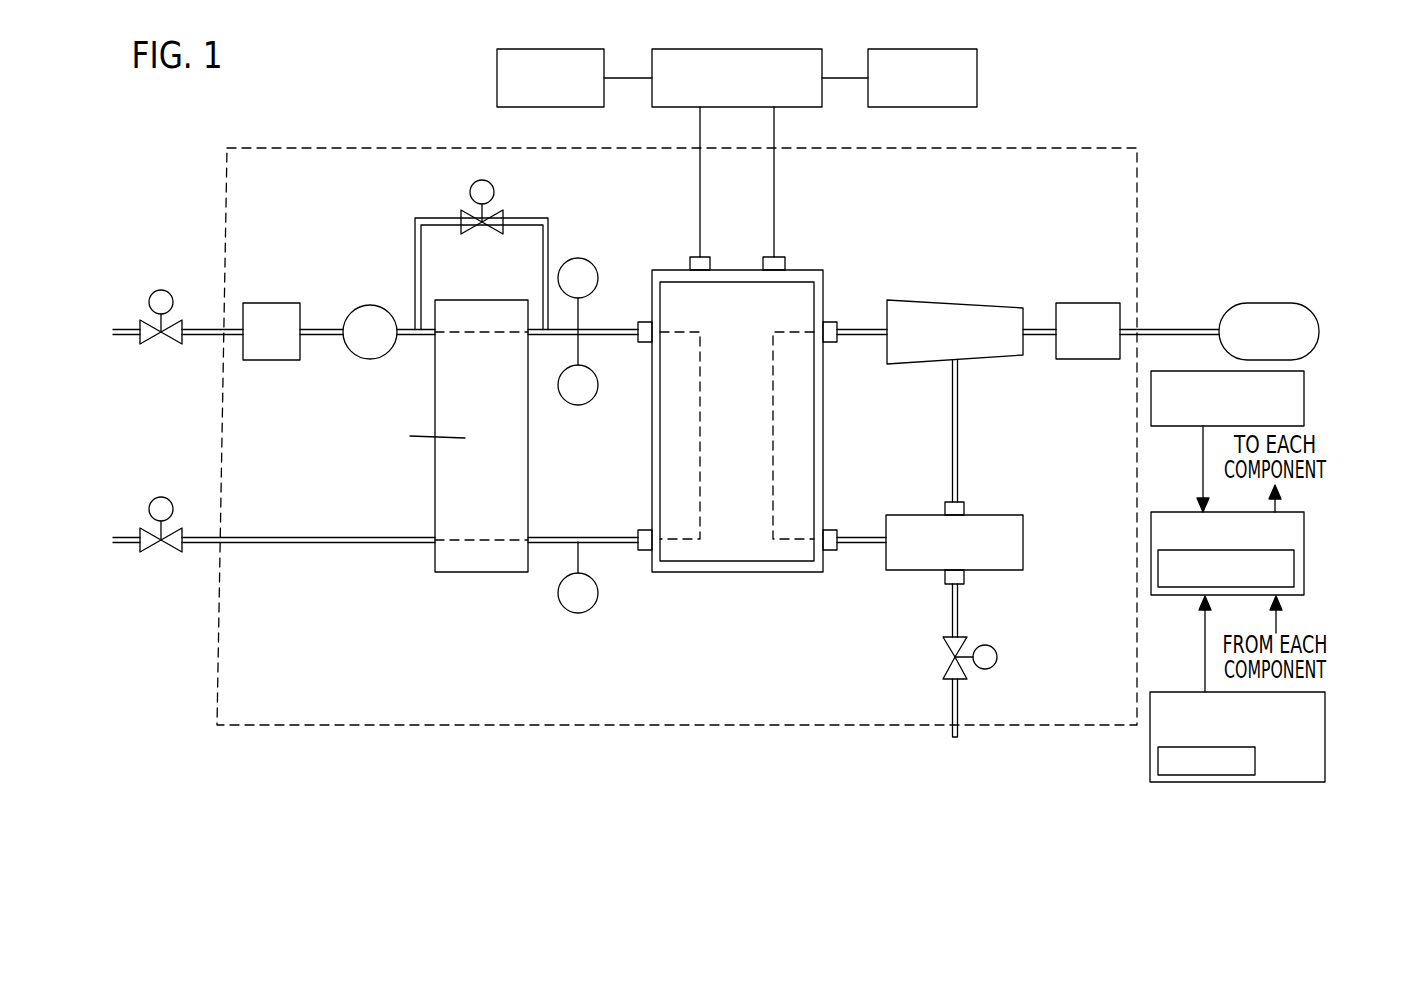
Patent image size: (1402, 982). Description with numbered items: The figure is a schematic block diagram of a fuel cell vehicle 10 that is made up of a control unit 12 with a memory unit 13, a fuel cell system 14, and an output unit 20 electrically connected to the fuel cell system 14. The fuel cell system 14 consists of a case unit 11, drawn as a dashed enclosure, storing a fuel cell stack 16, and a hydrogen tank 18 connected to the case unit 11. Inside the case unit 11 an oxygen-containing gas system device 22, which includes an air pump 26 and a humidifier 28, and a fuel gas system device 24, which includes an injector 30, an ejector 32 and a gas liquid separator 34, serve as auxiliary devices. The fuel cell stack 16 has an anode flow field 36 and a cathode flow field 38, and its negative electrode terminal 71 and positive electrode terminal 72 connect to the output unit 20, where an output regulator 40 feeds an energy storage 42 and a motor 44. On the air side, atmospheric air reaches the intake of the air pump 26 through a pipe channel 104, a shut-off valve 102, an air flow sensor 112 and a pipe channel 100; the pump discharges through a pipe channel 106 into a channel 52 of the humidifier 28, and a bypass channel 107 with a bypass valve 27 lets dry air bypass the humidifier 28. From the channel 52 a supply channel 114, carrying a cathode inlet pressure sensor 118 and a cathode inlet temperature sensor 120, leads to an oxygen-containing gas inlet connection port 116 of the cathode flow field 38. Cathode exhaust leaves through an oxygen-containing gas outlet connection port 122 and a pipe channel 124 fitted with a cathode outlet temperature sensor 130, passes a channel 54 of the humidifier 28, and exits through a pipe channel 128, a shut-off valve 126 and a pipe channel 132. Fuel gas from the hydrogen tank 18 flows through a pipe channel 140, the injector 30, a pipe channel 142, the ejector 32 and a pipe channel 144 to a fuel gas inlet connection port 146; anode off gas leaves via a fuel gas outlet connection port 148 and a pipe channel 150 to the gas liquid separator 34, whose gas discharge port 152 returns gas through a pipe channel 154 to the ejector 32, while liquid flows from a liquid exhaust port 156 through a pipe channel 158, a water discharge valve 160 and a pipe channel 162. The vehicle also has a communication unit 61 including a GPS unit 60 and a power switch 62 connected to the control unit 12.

The fuel cell vehicle 10 is at (323, 83).
The case unit 11 is at (1024, 146).
The control unit 12 is at (1185, 512).
The memory unit 13 is at (1296, 568).
The fuel cell system 14 is at (1102, 137).
The fuel cell stack 16 is at (823, 438).
The hydrogen tank 18 is at (1275, 303).
The output unit 20 is at (1000, 58).
The oxygen-containing gas system device 22 is at (310, 238).
The fuel gas system device 24 is at (1060, 410).
The air pump 26 is at (380, 306).
The bypass valve 27 is at (470, 188).
The humidifier 28 is at (468, 300).
The injector 30 is at (1082, 303).
The ejector 32 is at (910, 300).
The gas liquid separator 34 is at (1025, 533).
The anode flow field 36 is at (770, 416).
The cathode flow field 38 is at (700, 358).
The output regulator 40 is at (738, 48).
The energy storage 42 is at (556, 48).
The motor 44 is at (925, 48).
The channel 52 is at (478, 335).
The channel 54 is at (480, 537).
The GPS unit 60 is at (1258, 766).
The communication unit 61 is at (1150, 766).
The power switch 62 is at (1306, 399).
The negative electrode terminal 71 is at (690, 262).
The positive electrode terminal 72 is at (786, 262).
The pipe channel 100 is at (328, 337).
The shut-off valve 102 is at (158, 292).
The pipe channel 104 is at (132, 337).
The pipe channel 106 is at (414, 337).
The bypass channel 107 is at (515, 220).
The air flow sensor 112 is at (260, 303).
The supply channel 114 is at (600, 329).
The oxygen-containing gas inlet connection port 116 is at (640, 345).
The cathode inlet pressure sensor 118 is at (582, 258).
The cathode inlet temperature sensor 120 is at (585, 405).
The oxygen-containing gas outlet connection port 122 is at (640, 552).
The pipe channel 124 is at (560, 537).
The shut-off valve 126 is at (158, 497).
The pipe channel 128 is at (365, 537).
The cathode outlet temperature sensor 130 is at (565, 612).
The pipe channel 132 is at (132, 546).
The pipe channel 140 is at (1185, 329).
The pipe channel 142 is at (1040, 337).
The pipe channel 144 is at (862, 337).
The fuel gas inlet connection port 146 is at (840, 322).
The fuel gas outlet connection port 148 is at (840, 528).
The pipe channel 150 is at (858, 547).
The gas discharge port 152 is at (965, 505).
The pipe channel 154 is at (960, 438).
The liquid exhaust port 156 is at (940, 586).
The pipe channel 158 is at (960, 612).
The water discharge valve 160 is at (998, 657).
The pipe channel 162 is at (958, 705).